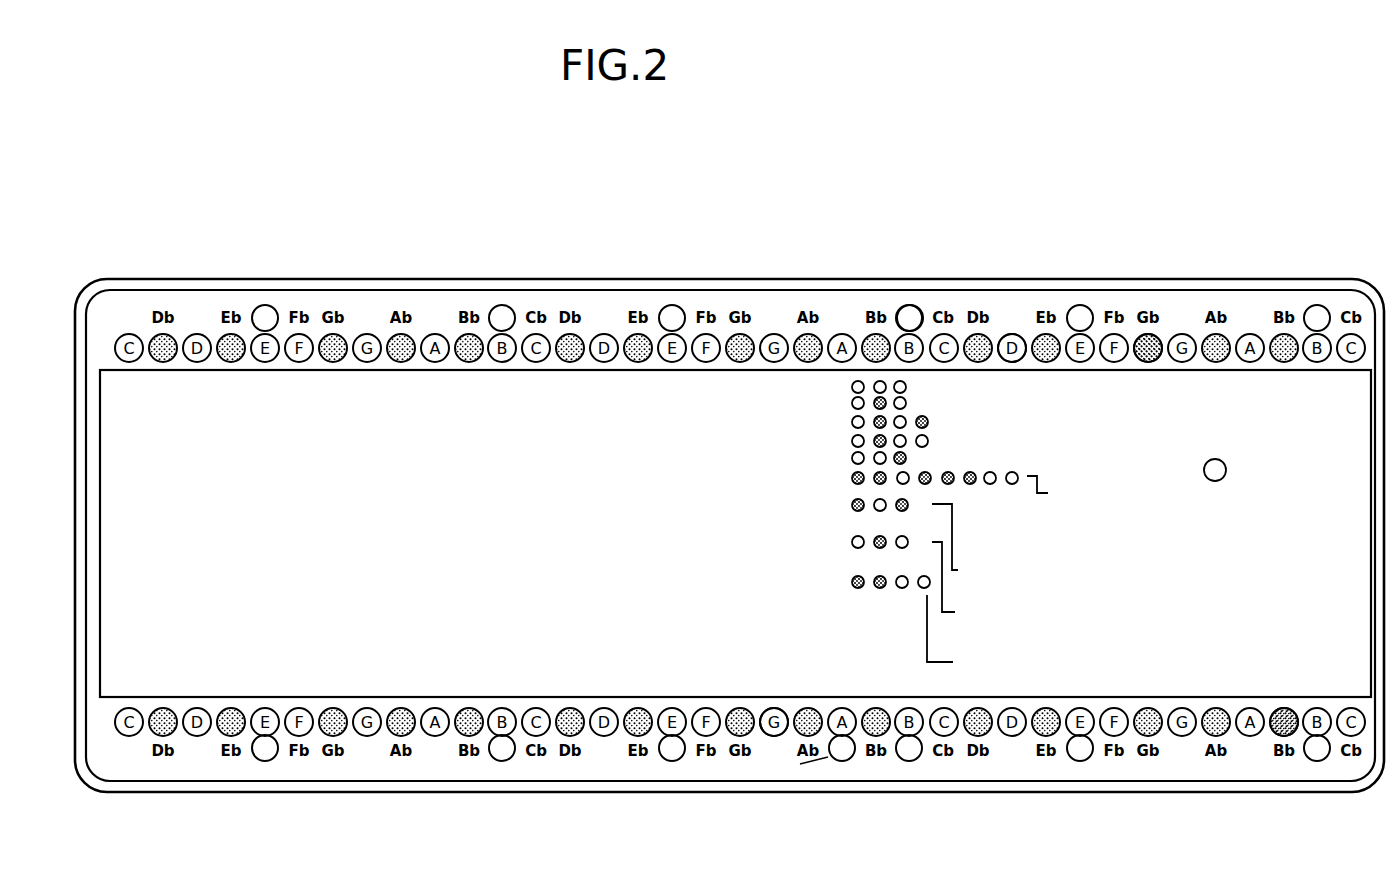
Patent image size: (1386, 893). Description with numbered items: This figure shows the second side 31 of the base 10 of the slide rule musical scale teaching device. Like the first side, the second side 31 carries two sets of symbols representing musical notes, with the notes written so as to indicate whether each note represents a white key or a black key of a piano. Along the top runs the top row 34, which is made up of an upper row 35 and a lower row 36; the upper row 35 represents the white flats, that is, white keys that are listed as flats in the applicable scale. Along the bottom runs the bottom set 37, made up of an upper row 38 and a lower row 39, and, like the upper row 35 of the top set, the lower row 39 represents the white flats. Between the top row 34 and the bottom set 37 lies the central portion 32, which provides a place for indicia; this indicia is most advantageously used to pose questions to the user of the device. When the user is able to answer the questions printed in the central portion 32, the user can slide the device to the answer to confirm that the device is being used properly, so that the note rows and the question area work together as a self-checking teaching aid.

The base 10 is at (1080, 143).
The second side 31 is at (653, 279).
The central portion 32 is at (685, 403).
The top row 34 is at (1158, 337).
The upper row 35 is at (913, 310).
The lower row 36 is at (1008, 336).
The bottom set 37 is at (1277, 727).
The upper row 38 is at (775, 708).
The lower row 39 is at (852, 740).